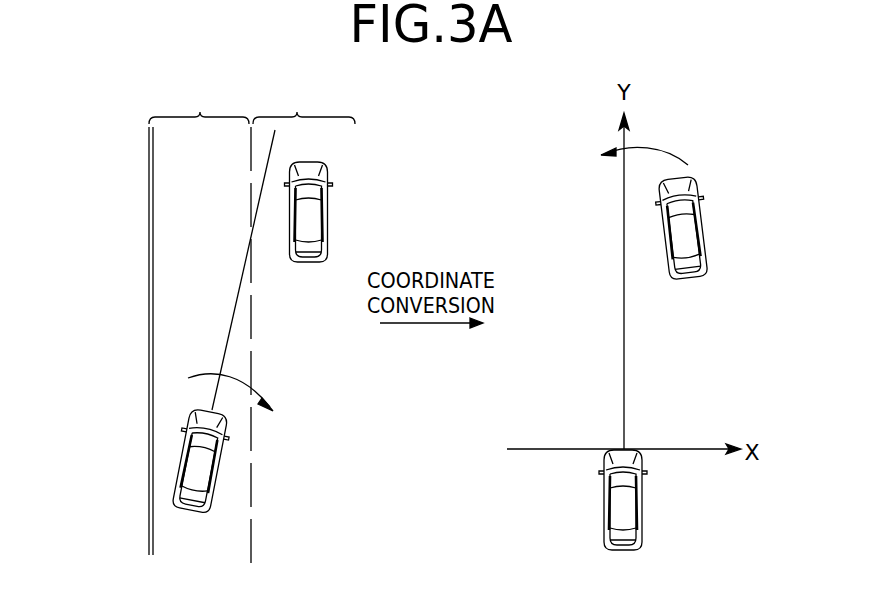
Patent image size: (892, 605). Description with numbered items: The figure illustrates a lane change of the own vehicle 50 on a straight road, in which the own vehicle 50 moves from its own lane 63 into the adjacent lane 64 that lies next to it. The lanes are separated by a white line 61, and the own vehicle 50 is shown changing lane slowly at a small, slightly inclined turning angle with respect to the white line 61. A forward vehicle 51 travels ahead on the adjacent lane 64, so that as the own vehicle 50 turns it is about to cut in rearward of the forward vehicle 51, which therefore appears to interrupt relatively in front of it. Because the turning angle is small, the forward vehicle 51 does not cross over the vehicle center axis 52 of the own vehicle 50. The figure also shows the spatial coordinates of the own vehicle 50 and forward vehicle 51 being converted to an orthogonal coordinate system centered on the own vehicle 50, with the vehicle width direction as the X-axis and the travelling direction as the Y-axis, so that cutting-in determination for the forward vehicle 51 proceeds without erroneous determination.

The own vehicle 50 is at (180, 470).
The forward vehicle 51 is at (327, 198).
The vehicle center axis 52 is at (242, 287).
The white line 61 is at (150, 362).
The own lane 63 is at (199, 108).
The adjacent lane 64 is at (304, 108).